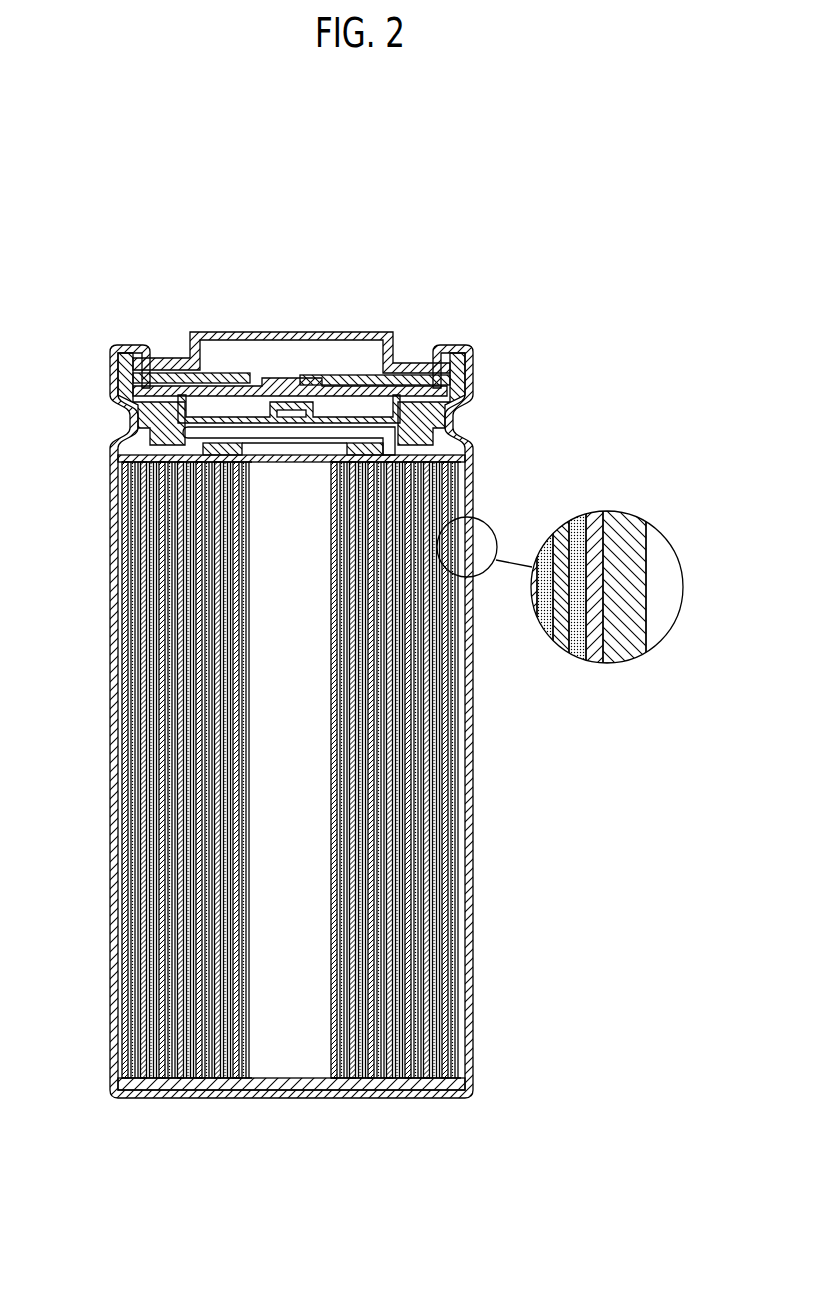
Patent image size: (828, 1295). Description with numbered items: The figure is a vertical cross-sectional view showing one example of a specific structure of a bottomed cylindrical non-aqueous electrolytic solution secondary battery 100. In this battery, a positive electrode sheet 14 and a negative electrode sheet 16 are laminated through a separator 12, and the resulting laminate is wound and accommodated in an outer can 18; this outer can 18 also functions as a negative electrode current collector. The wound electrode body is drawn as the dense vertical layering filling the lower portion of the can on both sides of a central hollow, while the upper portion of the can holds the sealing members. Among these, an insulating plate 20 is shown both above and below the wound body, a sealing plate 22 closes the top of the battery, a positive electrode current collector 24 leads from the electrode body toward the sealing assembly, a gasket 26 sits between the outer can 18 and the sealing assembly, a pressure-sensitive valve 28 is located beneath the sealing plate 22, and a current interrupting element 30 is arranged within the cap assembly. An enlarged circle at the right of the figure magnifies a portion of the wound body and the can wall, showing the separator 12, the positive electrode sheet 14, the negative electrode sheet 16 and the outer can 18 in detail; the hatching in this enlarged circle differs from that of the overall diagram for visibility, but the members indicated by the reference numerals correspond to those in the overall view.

The bottomed cylindrical non-aqueous electrolytic solution secondary battery 100 is at (442, 303).
The separator 12 is at (126, 541).
The positive electrode sheet 14 is at (122, 508).
The negative electrode sheet 16 is at (130, 573).
The outer can 18 is at (472, 960).
The insulating plate 20 is at (299, 456).
The sealing plate 22 is at (262, 331).
The positive electrode current collector 24 is at (270, 442).
The gasket 26 is at (452, 360).
The pressure-sensitive valve 28 is at (302, 396).
The current interrupting element 30 is at (297, 378).